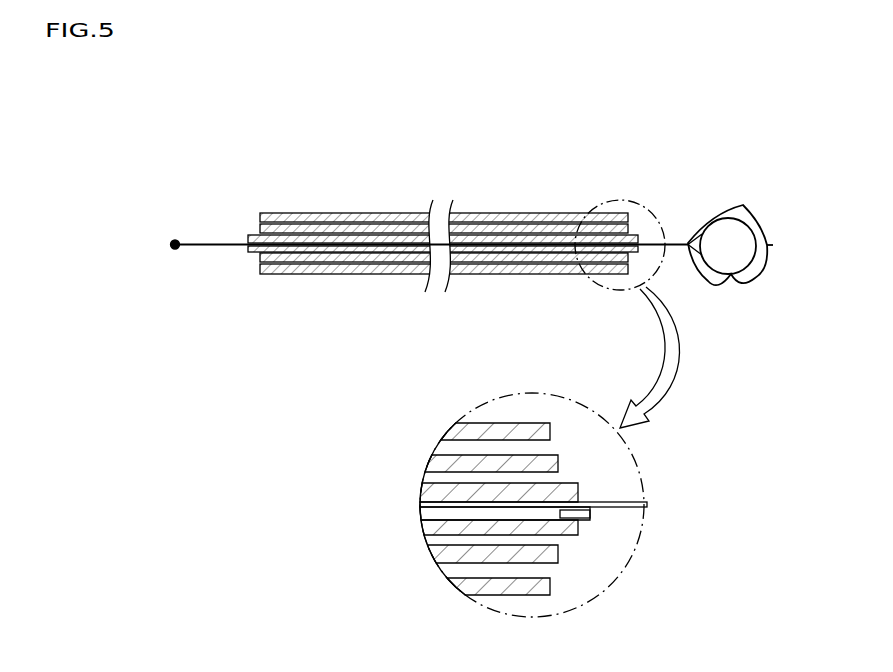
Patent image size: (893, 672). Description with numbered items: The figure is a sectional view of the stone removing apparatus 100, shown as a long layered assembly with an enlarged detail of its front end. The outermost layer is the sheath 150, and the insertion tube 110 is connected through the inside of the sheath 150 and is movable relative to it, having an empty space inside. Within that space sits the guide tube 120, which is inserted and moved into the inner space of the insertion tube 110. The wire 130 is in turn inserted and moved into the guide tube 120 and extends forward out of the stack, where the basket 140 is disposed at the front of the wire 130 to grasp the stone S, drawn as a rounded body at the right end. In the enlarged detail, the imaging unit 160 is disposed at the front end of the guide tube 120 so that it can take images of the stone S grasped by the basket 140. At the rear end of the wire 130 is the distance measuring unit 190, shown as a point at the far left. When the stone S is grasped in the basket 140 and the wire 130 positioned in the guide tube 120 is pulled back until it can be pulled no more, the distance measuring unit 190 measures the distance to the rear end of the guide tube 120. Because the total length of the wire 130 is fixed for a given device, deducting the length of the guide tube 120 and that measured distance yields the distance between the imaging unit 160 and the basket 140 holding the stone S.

The stone removing apparatus 100 is at (541, 143).
The insertion tube 110 is at (400, 233).
The guide tube 120 is at (250, 250).
The wire 130 is at (672, 252).
The basket 140 is at (690, 240).
The sheath 150 is at (300, 213).
The imaging unit 160 is at (592, 516).
The distance measuring unit 190 is at (175, 240).
The stone S is at (740, 210).